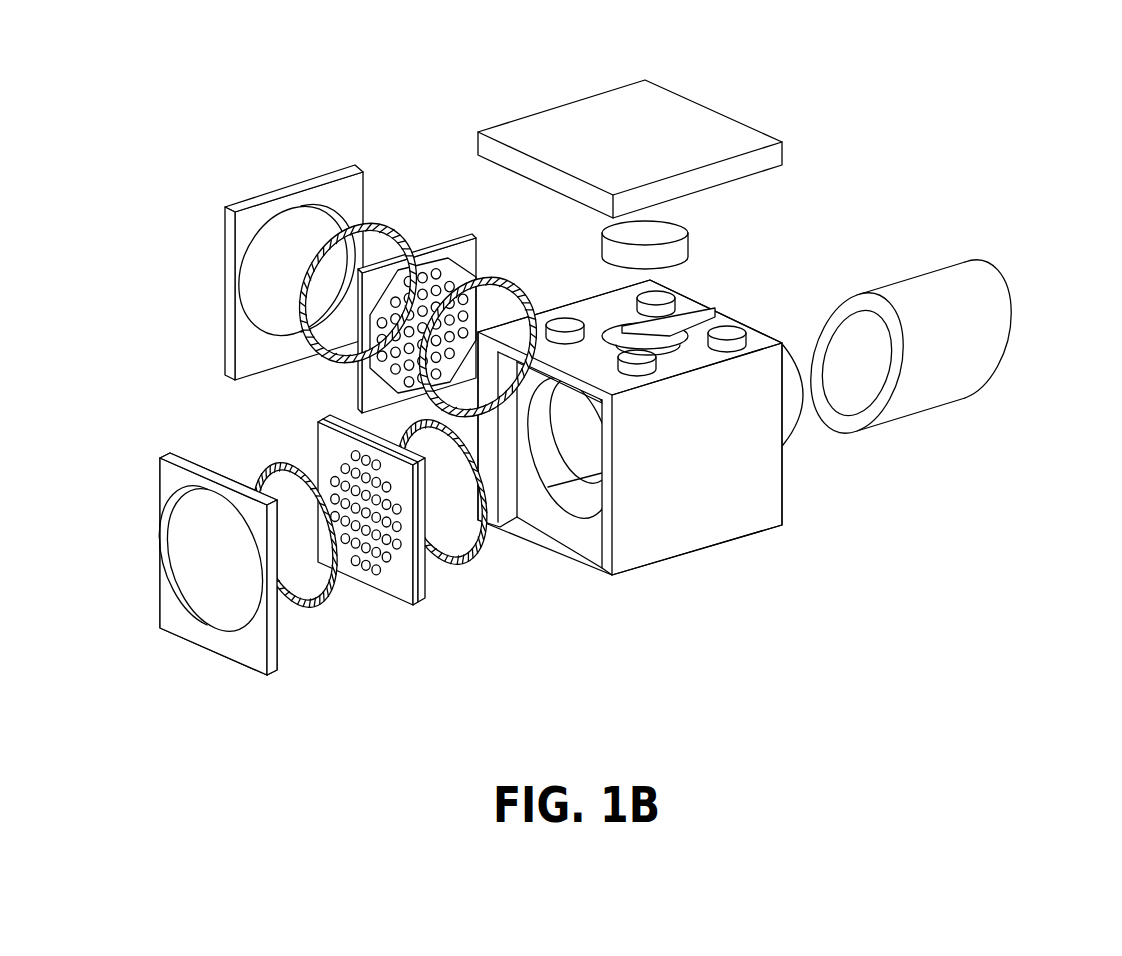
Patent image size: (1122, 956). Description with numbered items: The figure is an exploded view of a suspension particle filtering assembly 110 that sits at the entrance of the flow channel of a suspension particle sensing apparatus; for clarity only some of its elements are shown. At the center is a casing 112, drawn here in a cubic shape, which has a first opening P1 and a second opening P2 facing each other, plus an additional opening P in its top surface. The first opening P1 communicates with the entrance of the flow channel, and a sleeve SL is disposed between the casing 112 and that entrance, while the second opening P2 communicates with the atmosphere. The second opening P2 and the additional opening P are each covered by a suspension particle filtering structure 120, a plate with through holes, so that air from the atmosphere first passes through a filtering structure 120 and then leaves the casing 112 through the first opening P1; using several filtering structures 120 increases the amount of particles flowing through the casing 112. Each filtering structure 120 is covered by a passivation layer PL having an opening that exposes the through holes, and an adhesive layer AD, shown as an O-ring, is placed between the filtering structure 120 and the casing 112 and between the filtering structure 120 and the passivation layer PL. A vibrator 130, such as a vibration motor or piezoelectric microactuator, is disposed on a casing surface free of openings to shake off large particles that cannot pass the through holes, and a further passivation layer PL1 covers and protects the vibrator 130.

The suspension particle filtering assembly 110 is at (986, 96).
The casing 112 is at (656, 428).
The suspension particle filtering structure 120 is at (447, 208).
The vibrator 130 is at (680, 253).
The passivation layer PL is at (250, 215).
The passivation layer PL1 is at (698, 123).
The adhesive layer AD is at (387, 224).
The additional opening P is at (577, 288).
The first opening P1 is at (794, 328).
The second opening P2 is at (586, 496).
The sleeve SL is at (982, 327).